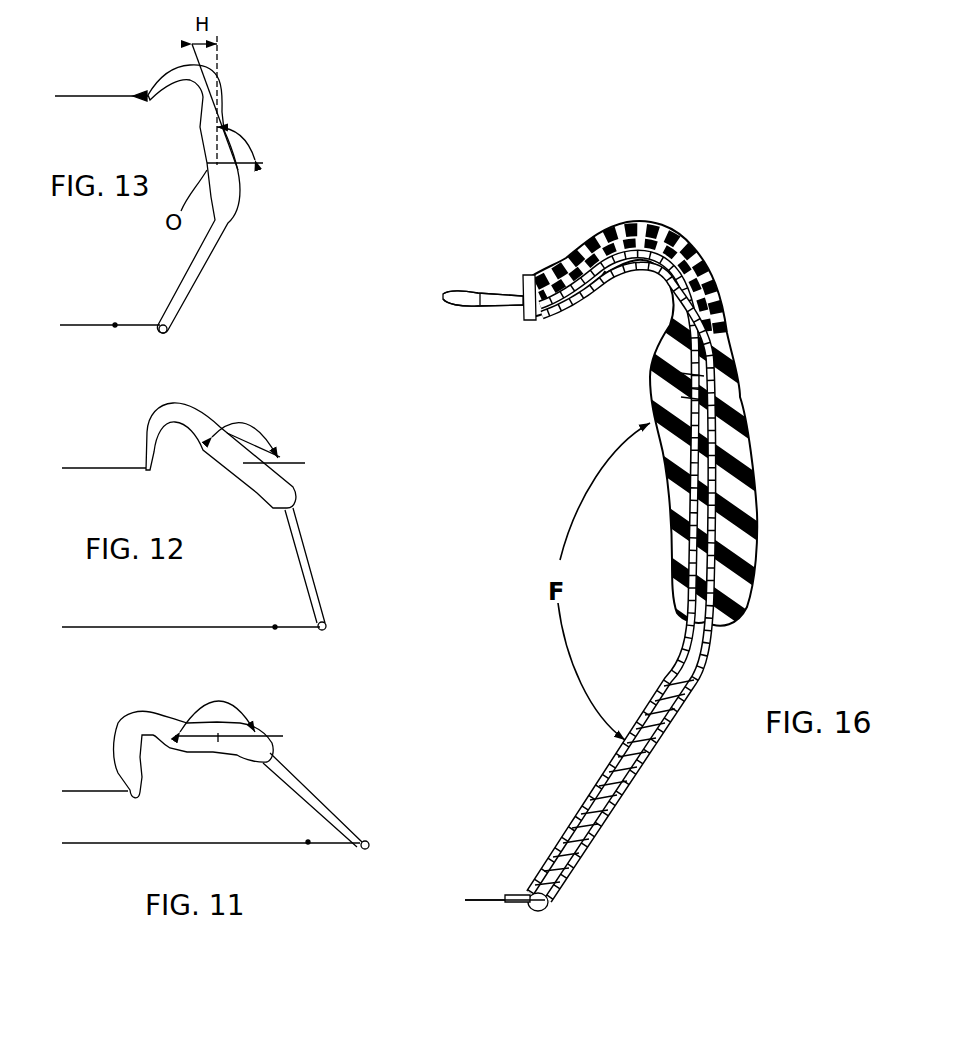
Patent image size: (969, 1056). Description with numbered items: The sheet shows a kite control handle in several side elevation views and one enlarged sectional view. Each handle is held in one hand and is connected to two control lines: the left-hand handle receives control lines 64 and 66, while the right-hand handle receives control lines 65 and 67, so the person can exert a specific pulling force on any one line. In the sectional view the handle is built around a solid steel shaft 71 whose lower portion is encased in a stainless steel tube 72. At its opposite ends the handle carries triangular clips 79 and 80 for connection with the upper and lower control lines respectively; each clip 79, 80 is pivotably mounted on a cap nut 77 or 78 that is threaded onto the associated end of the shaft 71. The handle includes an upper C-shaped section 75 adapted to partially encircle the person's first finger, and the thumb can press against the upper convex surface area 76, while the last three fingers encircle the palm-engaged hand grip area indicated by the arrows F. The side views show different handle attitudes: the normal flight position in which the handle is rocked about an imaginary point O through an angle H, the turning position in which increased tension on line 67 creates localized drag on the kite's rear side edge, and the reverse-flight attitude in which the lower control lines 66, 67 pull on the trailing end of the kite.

In FIG. 16, the control line 64 is at (450, 292).
In FIG. 13, the control line 65 is at (108, 96).
In FIG. 12, the control line 65 is at (90, 468).
In FIG. 11, the control line 65 is at (72, 791).
In FIG. 16, the control line 65 is at (469, 270).
In FIG. 16, the control line 66 is at (480, 899).
In FIG. 13, the control line 67 is at (78, 327).
In FIG. 12, the control line 67 is at (142, 628).
In FIG. 11, the control line 67 is at (150, 843).
In FIG. 16, the control line 67 is at (502, 877).
In FIG. 16, the shaft 71 is at (663, 727).
In FIG. 16, the stainless steel tube 72 is at (597, 840).
In FIG. 16, the upper C-shaped section 75 is at (693, 250).
In FIG. 16, the upper convex surface area 76 is at (603, 225).
In FIG. 16, the cap nut 77 is at (514, 290).
In FIG. 16, the cap nut 78 is at (535, 913).
In FIG. 16, the triangular clip 79 is at (490, 295).
In FIG. 16, the triangular clip 80 is at (530, 897).